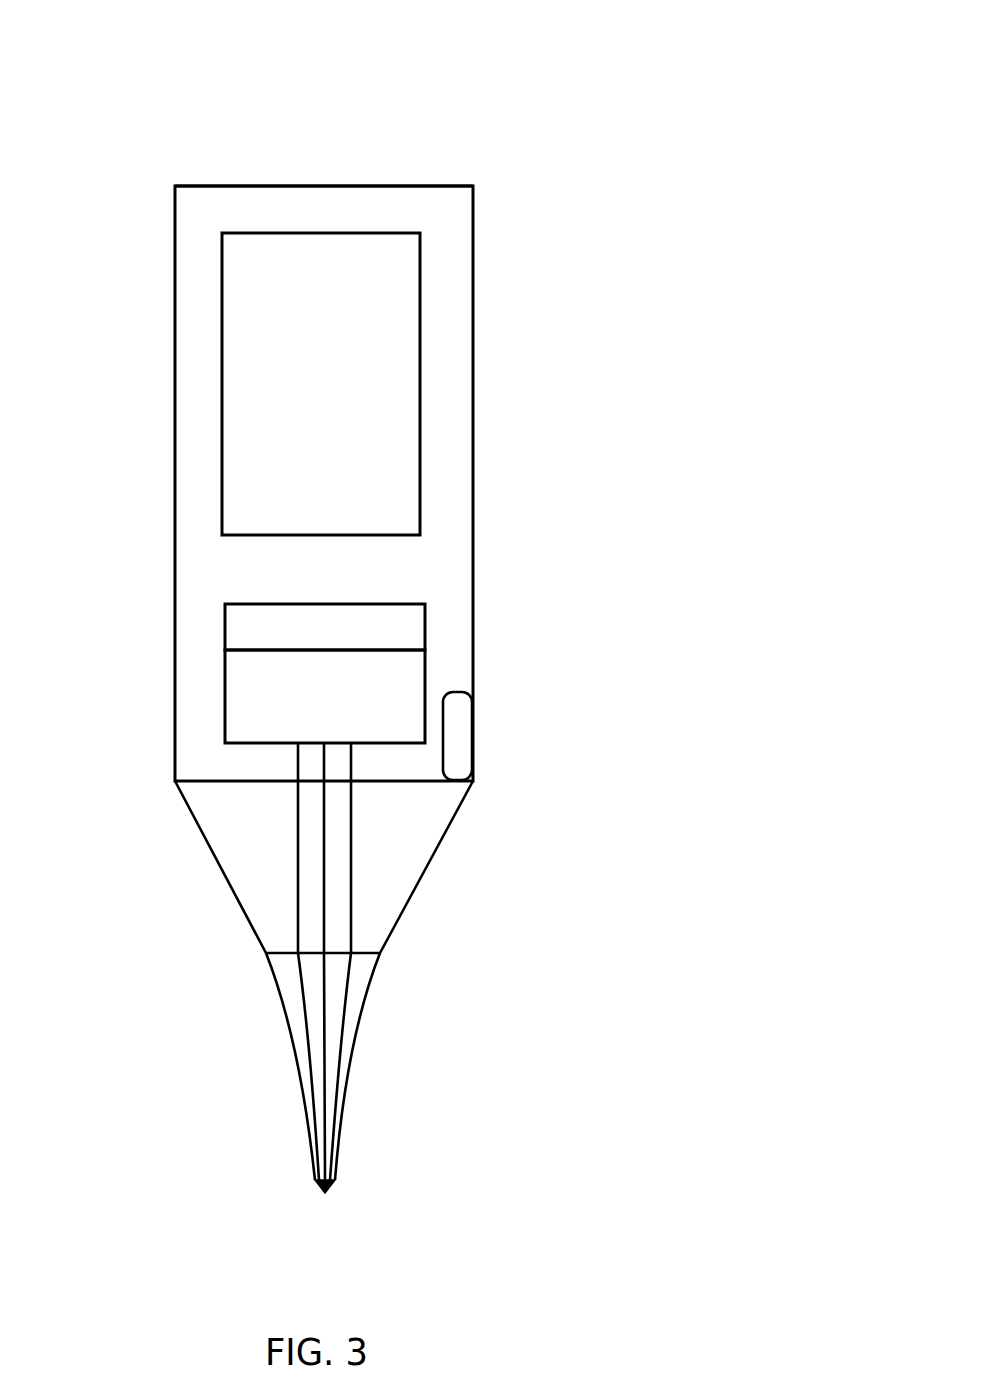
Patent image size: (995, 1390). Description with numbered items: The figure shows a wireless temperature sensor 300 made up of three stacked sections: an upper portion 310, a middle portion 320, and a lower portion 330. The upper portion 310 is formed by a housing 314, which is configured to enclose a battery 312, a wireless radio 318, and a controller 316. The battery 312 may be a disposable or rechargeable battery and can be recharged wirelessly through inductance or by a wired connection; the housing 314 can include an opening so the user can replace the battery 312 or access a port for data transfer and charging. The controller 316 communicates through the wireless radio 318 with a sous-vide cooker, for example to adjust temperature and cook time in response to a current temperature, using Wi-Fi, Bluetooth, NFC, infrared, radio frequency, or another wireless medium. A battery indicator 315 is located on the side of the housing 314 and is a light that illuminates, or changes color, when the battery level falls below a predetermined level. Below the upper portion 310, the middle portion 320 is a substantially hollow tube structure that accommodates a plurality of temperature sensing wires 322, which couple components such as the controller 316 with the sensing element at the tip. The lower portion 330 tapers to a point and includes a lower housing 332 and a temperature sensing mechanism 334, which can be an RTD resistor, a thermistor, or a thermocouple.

The wireless temperature sensor 300 is at (665, 115).
The upper portion 310 is at (670, 763).
The battery 312 is at (222, 385).
The housing 314 is at (72, 490).
The battery indicator 315 is at (475, 735).
The controller 316 is at (225, 698).
The wireless radio 318 is at (225, 628).
The middle portion 320 is at (670, 777).
The temperature sensing wires 322 is at (298, 865).
The lower portion 330 is at (670, 960).
The lower housing 332 is at (292, 1043).
The temperature sensing mechanism 334 is at (325, 1193).